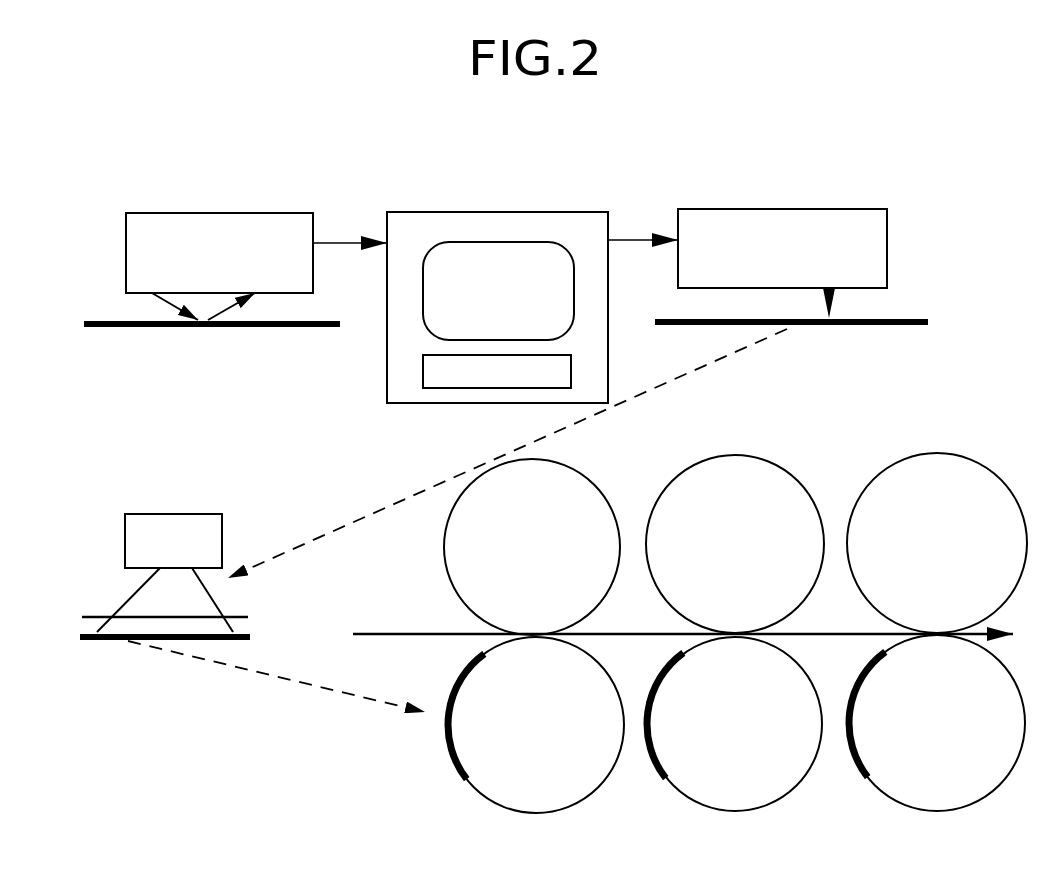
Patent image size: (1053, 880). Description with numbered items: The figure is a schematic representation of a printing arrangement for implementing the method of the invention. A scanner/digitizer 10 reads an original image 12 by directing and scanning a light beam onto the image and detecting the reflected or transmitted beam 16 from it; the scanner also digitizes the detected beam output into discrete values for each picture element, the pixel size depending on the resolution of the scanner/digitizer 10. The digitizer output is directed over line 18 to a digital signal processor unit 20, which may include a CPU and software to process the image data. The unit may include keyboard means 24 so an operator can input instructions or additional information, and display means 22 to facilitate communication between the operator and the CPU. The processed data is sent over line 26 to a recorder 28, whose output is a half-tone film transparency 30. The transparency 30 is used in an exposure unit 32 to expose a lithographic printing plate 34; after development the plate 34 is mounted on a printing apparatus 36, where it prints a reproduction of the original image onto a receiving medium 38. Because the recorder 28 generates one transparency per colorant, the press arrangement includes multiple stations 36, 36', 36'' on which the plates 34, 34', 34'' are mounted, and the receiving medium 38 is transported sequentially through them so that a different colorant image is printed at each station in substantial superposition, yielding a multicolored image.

The scanner/digitizer 10 is at (219, 253).
The original image 12 is at (212, 343).
The reflected beam 16 is at (223, 306).
The line 18 is at (350, 217).
The digital signal processor unit 20 is at (497, 285).
The display means 22 is at (498, 291).
The keyboard means 24 is at (497, 371).
The line 26 is at (643, 213).
The recorder 28 is at (782, 263).
The half-tone film transparency 30 is at (505, 469).
The exposure unit 32 is at (165, 573).
The lithographic printing plate 34 is at (282, 708).
The printing plate 34' is at (649, 744).
The printing plate 34'' is at (856, 734).
The printing apparatus 36 is at (534, 636).
The printing station 36' is at (735, 633).
The printing station 36'' is at (937, 632).
The receiving medium 38 is at (683, 615).